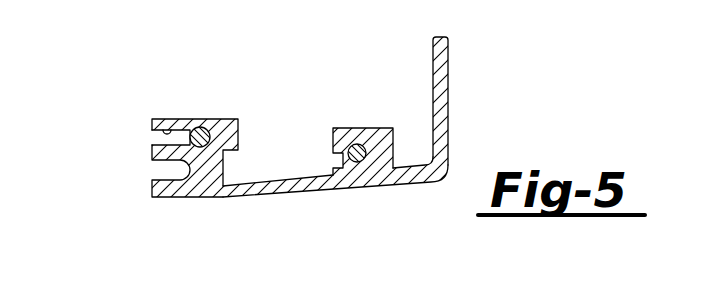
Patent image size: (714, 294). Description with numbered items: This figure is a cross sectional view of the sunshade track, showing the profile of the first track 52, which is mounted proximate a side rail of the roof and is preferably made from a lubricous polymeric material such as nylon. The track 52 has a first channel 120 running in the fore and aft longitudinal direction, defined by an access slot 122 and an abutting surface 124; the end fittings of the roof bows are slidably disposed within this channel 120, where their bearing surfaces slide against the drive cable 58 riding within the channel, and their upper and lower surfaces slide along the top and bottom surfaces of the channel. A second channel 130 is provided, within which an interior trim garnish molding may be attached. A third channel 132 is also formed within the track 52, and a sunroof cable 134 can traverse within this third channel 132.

The first track 52 is at (448, 92).
The cable 58 is at (221, 165).
The first channel 120 is at (177, 123).
The access slot 122 is at (138, 139).
The abutting surface 124 is at (203, 130).
The second channel 130 is at (152, 180).
The third channel 132 is at (333, 150).
The sunroof cable 134 is at (367, 137).